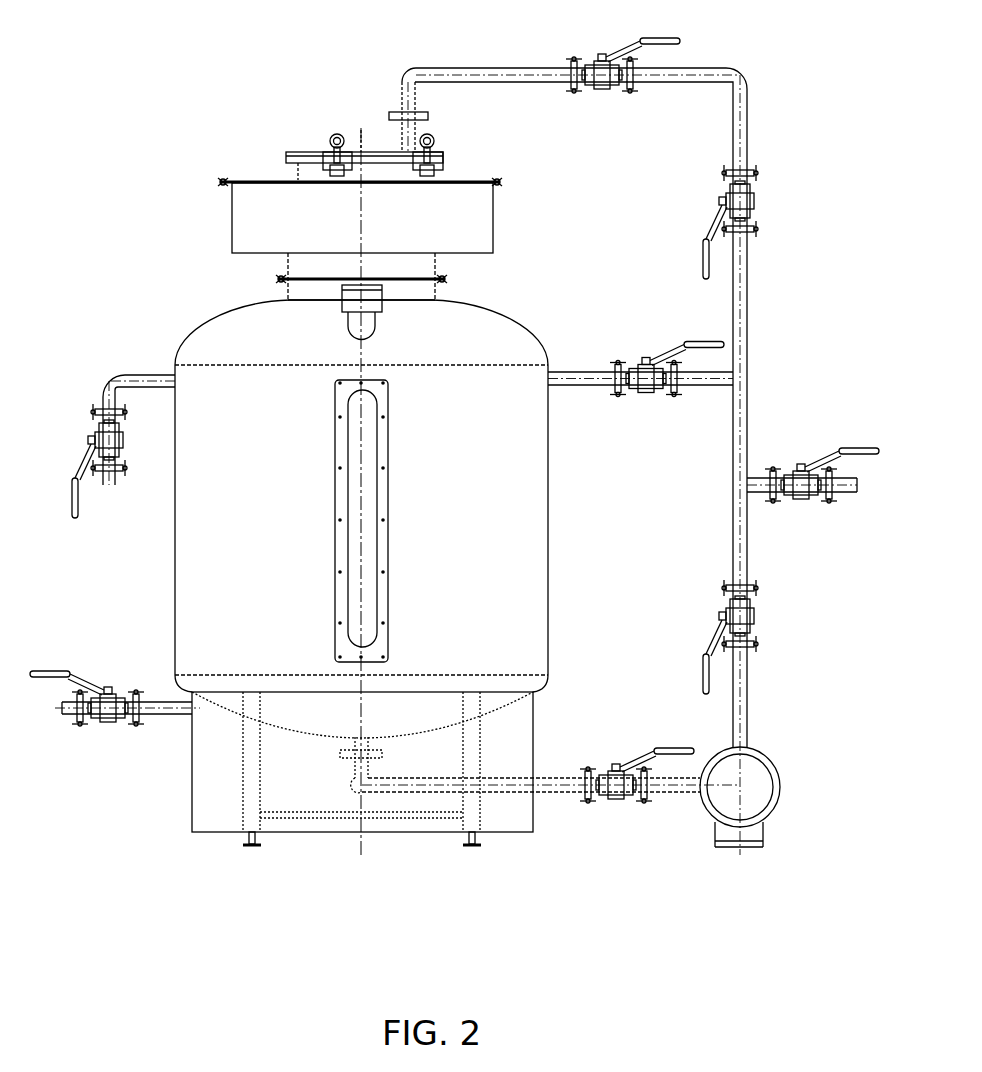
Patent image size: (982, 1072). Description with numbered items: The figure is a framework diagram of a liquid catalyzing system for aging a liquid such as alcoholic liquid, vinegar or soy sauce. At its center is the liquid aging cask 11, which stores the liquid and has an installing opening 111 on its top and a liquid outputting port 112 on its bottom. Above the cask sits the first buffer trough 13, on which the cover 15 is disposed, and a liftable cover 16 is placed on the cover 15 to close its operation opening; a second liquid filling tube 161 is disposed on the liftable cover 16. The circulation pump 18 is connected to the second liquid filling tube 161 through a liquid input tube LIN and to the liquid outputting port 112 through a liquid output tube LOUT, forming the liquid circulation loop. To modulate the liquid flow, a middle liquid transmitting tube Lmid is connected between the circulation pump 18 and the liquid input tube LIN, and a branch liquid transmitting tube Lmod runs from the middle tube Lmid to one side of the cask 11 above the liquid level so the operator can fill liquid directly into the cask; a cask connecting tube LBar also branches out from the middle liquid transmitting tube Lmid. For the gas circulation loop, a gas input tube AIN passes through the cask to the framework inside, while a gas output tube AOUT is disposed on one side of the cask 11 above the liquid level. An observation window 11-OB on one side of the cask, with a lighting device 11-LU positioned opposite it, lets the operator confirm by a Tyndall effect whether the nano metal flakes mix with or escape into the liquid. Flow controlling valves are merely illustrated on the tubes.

The liquid aging cask 11 is at (558, 581).
The observation window 11-OB is at (353, 548).
The lighting device 11-LU is at (368, 323).
The installing opening 111 is at (292, 297).
The liquid outputting port 112 is at (355, 743).
The first buffer trough 13 is at (496, 243).
The cover 15 is at (503, 176).
The liftable cover 16 is at (280, 150).
The second liquid filling tube 161 is at (403, 138).
The circulation pump 18 is at (776, 798).
The liquid input tube LIN is at (515, 68).
The middle liquid transmitting tube Lmid is at (733, 523).
The branch liquid transmitting tube Lmod is at (583, 385).
The cask connecting tube LBar is at (845, 492).
The liquid output tube LOUT is at (400, 792).
The gas input tube AIN is at (163, 714).
The gas output tube AOUT is at (128, 375).